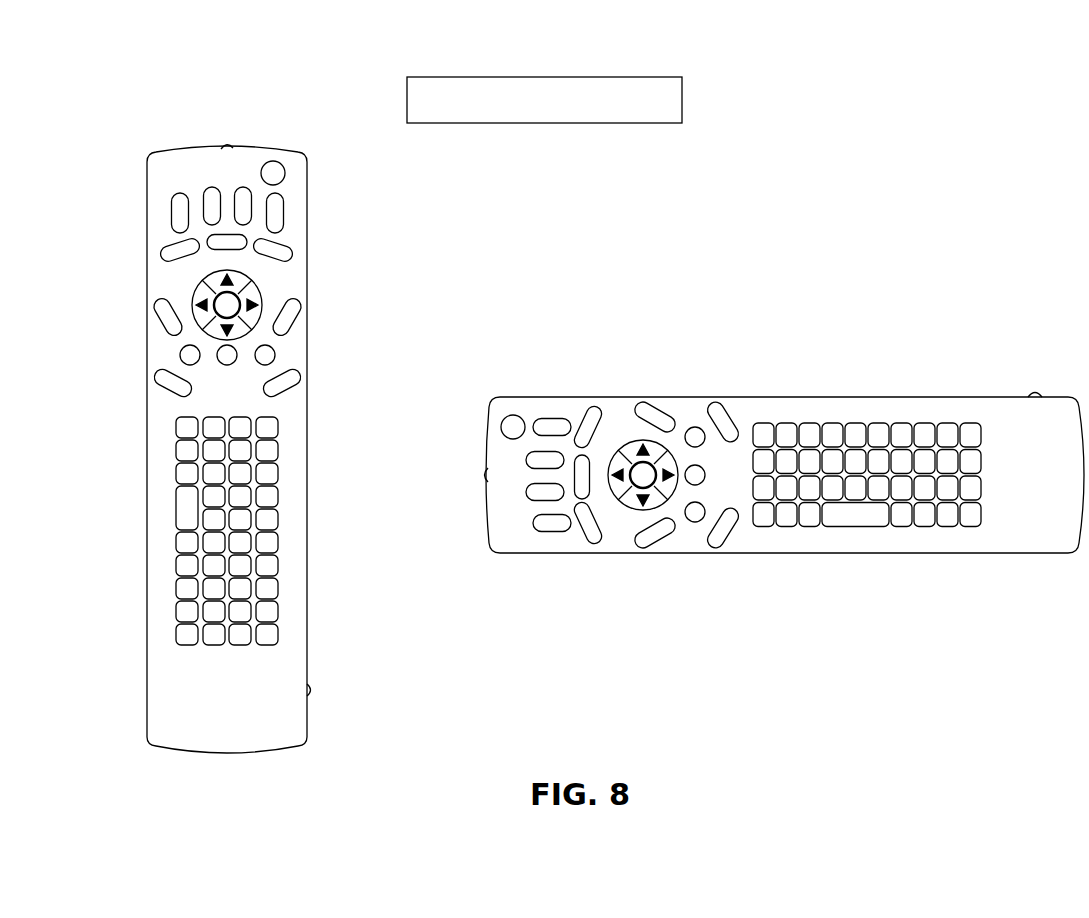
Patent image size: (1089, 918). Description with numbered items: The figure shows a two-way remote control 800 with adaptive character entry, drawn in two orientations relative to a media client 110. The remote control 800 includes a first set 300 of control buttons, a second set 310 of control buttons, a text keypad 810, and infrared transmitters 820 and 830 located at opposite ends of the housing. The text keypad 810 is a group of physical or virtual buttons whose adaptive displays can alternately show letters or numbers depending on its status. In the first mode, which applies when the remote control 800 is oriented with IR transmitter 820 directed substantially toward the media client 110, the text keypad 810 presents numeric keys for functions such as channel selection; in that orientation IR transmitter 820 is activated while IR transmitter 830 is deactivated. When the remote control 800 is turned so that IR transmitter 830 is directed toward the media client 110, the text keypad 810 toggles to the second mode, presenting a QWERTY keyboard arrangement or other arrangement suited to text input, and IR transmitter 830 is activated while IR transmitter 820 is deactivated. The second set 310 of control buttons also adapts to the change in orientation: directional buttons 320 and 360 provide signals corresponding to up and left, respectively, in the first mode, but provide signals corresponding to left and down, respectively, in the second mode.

The media client 110 is at (544, 100).
The remote control 800 is at (588, 240).
The IR transmitter 820 is at (485, 471).
The IR transmitter 830 is at (1019, 346).
The first set of control buttons 300 is at (318, 160).
The second set of control buttons 310 is at (405, 421).
The directional button 320 is at (217, 268).
The directional button 360 is at (193, 297).
The text keypad 810 is at (990, 385).